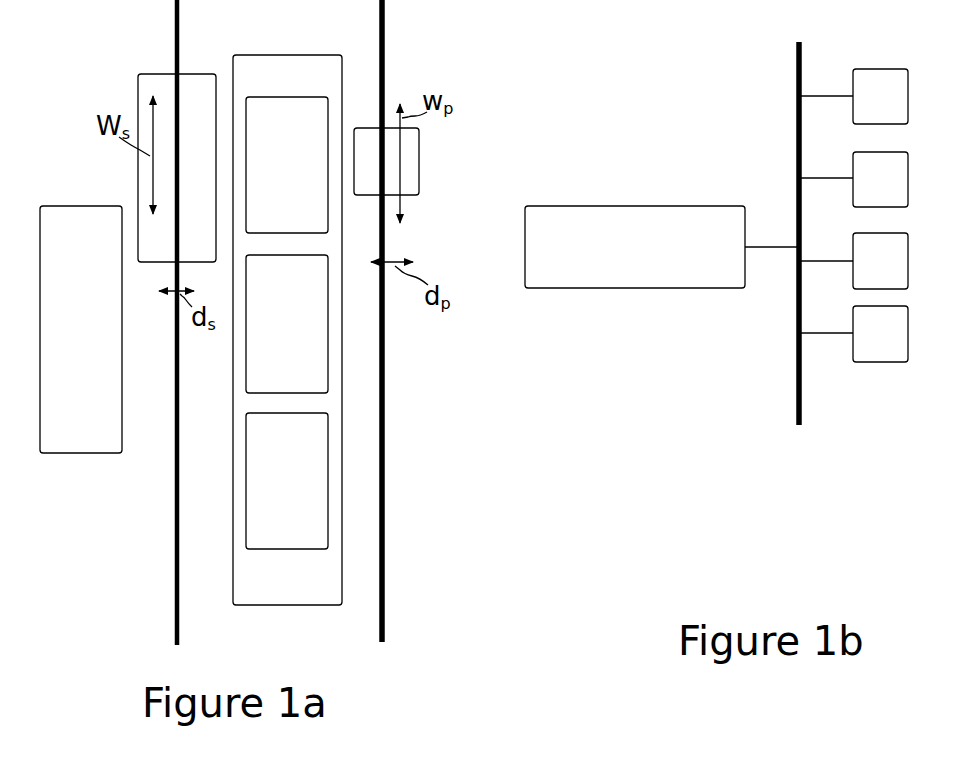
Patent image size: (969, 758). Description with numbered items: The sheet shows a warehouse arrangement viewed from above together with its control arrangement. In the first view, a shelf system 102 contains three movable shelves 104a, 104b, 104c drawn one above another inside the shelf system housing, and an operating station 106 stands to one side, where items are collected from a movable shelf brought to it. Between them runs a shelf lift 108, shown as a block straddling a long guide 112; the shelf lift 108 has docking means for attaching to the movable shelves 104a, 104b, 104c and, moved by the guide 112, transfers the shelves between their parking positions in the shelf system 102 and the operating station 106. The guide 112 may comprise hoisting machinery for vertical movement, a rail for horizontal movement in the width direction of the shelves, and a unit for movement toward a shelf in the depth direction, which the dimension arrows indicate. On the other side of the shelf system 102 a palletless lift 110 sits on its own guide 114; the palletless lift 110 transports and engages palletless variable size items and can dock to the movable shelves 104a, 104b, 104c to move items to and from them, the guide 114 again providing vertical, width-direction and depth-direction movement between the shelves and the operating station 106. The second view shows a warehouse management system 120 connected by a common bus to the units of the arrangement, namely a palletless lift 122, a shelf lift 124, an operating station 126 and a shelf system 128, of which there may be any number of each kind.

In FIG. 1A, the shelf system 102 is at (287, 330).
In FIG. 1A, the movable shelf 104a is at (287, 165).
In FIG. 1A, the movable shelf 104b is at (287, 324).
In FIG. 1A, the movable shelf 104c is at (287, 481).
In FIG. 1A, the operating station 106 is at (81, 329).
In FIG. 1A, the shelf lift 108 is at (156, 74).
In FIG. 1A, the palletless lift 110 is at (419, 195).
In FIG. 1A, the guide of the shelf lift 112 is at (177, 581).
In FIG. 1A, the guide of the palletless lift 114 is at (384, 497).
In FIG. 1B, the warehouse management system 120 is at (635, 247).
In FIG. 1B, the palletless lift 122 is at (880, 96).
In FIG. 1B, the shelf lift 124 is at (880, 179).
In FIG. 1B, the operating station 126 is at (880, 261).
In FIG. 1B, the shelf system 128 is at (880, 334).